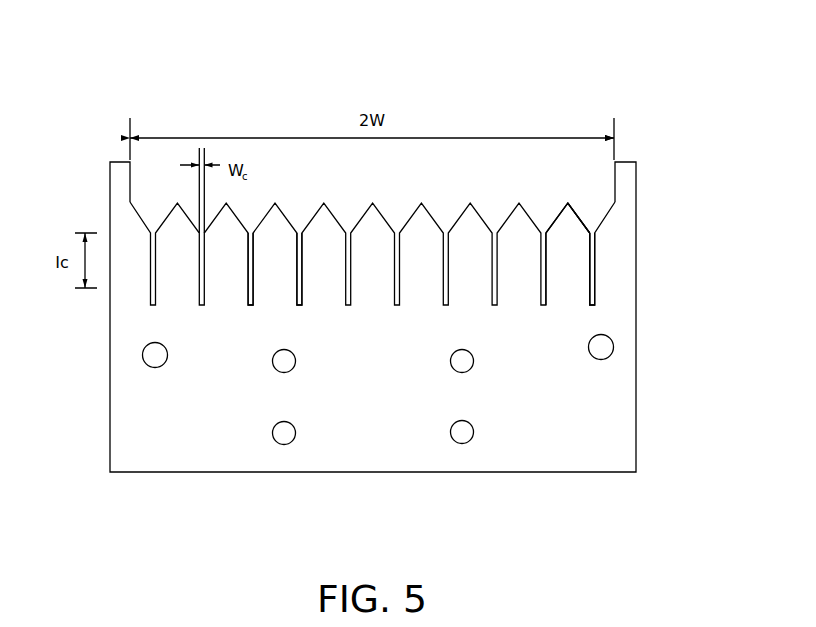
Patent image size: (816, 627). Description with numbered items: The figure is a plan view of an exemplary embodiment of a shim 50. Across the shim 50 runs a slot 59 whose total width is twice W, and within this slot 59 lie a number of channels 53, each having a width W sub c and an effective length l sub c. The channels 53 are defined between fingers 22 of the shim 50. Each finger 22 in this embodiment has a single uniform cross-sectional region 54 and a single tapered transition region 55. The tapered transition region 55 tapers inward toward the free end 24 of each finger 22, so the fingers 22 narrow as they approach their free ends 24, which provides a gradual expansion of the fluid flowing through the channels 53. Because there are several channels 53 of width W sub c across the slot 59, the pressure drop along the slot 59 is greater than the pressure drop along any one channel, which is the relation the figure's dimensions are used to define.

The shim 50 is at (615, 443).
The slot 59 is at (458, 185).
The channels 53 is at (298, 232).
The free end 24 is at (567, 202).
The tapered transition region 55 is at (578, 215).
The fingers 22 is at (563, 251).
The uniform cross-sectional region 54 is at (593, 283).